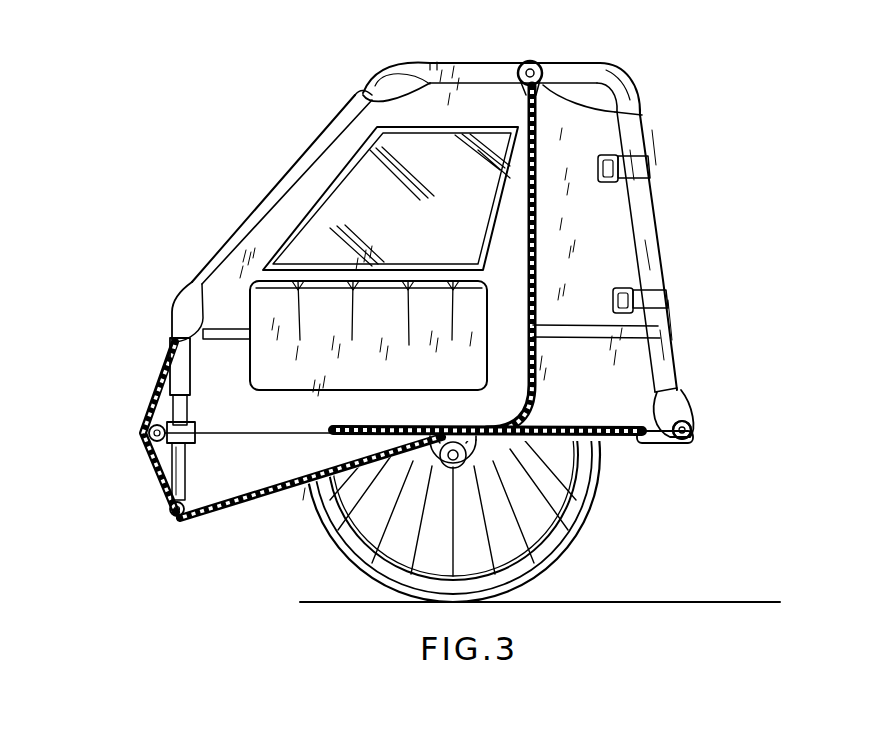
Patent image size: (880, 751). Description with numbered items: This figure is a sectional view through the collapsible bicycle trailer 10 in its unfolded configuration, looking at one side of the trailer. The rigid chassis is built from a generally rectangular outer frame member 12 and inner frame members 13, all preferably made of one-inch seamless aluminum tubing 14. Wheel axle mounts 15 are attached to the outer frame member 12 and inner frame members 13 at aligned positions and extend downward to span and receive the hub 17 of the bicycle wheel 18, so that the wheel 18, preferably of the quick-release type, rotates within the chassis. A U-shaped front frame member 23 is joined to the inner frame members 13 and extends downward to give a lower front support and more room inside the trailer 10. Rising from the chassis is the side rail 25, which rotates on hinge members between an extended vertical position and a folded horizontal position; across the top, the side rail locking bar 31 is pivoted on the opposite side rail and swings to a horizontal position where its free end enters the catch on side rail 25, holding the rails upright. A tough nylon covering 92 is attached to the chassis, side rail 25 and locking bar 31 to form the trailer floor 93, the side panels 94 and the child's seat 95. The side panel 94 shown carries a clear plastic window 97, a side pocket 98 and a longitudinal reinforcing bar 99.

The collapsible bicycle trailer 10 is at (670, 179).
The outer frame member 12 is at (148, 434).
The inner frame members 13 is at (692, 431).
The seamless aluminum tubing 14 is at (692, 431).
The wheel axle mounts 15 is at (470, 426).
The hub 17 is at (430, 430).
The bicycle wheel 18 is at (580, 524).
The U-shaped front frame member 23 is at (190, 500).
The side rail 25 is at (393, 75).
The side rail locking bar 31 is at (538, 64).
The covering 92 is at (150, 478).
The trailer floor 93 is at (253, 508).
The side panels 94 is at (208, 367).
The child's seat 95 is at (537, 290).
The clear plastic windows 97 is at (466, 158).
The side pockets 98 is at (404, 300).
The longitudinal reinforcing bars 99 is at (593, 330).